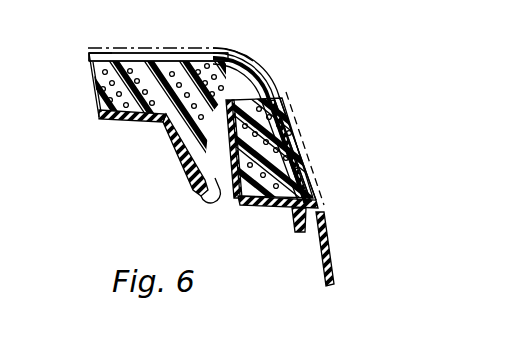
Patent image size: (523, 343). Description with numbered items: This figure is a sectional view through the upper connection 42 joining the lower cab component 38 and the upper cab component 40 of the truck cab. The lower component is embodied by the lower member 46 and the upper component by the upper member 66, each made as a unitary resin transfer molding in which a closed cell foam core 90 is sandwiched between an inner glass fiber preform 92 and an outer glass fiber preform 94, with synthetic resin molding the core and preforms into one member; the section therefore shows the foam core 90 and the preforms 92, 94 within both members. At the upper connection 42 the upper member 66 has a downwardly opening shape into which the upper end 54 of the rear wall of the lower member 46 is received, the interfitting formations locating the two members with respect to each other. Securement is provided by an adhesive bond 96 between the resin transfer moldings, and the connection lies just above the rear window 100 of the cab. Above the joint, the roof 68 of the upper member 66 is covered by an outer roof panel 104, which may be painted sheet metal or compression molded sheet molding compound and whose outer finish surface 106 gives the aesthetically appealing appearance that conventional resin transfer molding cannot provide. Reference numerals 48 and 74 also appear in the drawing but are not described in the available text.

The lower cab component 38 is at (252, 222).
The upper cab component 40 is at (84, 47).
The upper connection 42 is at (248, 58).
The lower member 46 is at (303, 185).
The facing ply 48 is at (300, 162).
The upper end of the rear wall 54 is at (280, 98).
The upper member 66 is at (84, 78).
The roof 68 is at (189, 51).
The corner reinforcing ply 74 is at (262, 70).
The closed cell foam core 90 is at (100, 98).
The inner glass fiber preform 92 is at (117, 126).
The outer glass fiber preform 94 is at (110, 55).
The adhesive bond 96 is at (275, 83).
The rear window 100 is at (331, 242).
The outer roof panel 104 is at (248, 30).
The outer finish surface 106 is at (175, 46).